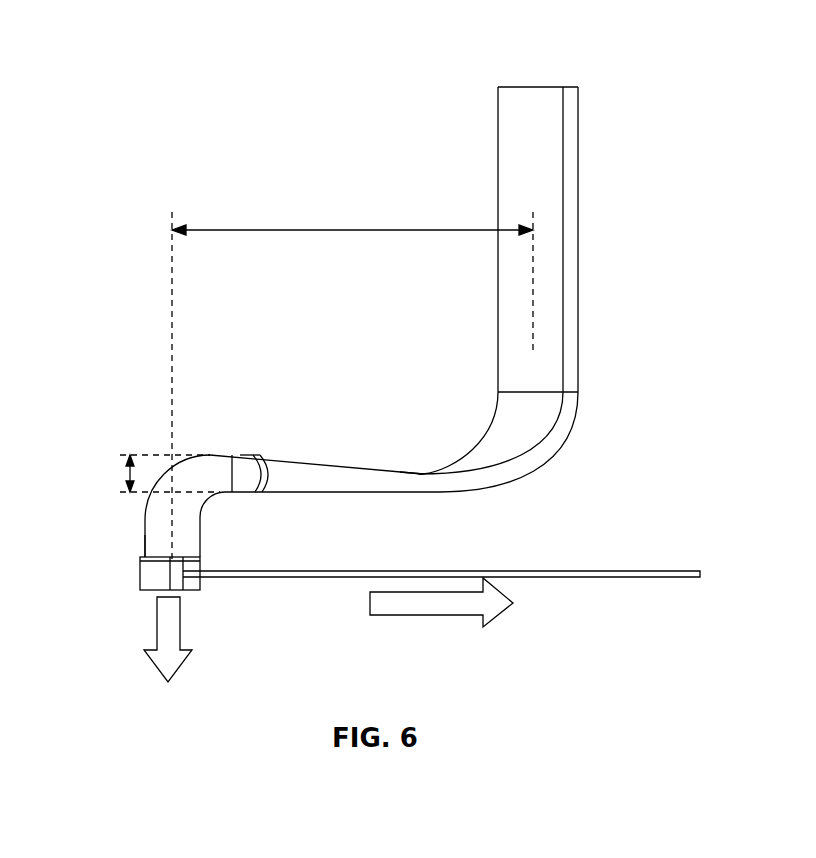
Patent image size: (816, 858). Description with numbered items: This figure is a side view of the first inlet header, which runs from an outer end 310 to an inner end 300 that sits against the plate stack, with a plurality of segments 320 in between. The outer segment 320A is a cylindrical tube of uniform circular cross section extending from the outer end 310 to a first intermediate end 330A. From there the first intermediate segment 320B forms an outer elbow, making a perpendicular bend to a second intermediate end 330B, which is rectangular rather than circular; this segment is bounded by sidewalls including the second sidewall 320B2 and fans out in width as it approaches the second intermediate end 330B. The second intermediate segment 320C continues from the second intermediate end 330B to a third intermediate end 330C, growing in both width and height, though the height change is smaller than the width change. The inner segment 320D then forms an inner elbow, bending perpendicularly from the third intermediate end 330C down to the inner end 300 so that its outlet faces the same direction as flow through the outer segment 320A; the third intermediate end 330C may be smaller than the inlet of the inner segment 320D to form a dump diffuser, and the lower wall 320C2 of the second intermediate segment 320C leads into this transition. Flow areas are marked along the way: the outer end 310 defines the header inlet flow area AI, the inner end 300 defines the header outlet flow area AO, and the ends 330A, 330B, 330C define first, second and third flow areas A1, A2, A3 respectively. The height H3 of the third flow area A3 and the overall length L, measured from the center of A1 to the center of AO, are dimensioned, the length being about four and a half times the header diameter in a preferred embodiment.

The inner end 300 is at (140, 572).
The outer end 310 is at (568, 100).
The plurality of segments 320 is at (578, 292).
The outer segment 320A is at (580, 195).
The first intermediate segment 320B is at (477, 443).
The second sidewall 320B2 is at (540, 468).
The second intermediate segment 320C is at (327, 460).
The lower wall of horizontal portion 320C2 is at (367, 494).
The inner segment 320D is at (145, 517).
The first intermediate end 330A is at (578, 392).
The second intermediate end 330B is at (410, 494).
The third intermediate end 330C is at (258, 496).
The header inlet flow area AI is at (533, 85).
The header outlet flow area AO is at (142, 528).
The first flow area A1 is at (498, 393).
The second flow area A2 is at (410, 473).
The third flow area A3 is at (254, 455).
The overall length L is at (352, 229).
The height of the third flow area H3 is at (127, 470).